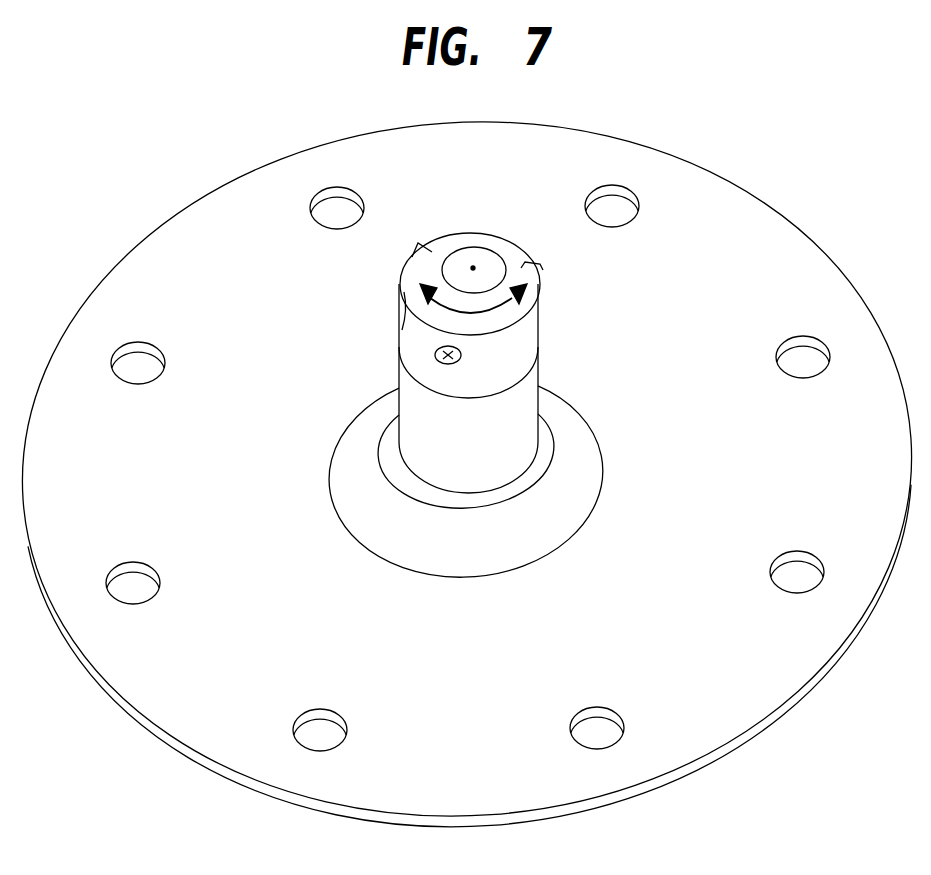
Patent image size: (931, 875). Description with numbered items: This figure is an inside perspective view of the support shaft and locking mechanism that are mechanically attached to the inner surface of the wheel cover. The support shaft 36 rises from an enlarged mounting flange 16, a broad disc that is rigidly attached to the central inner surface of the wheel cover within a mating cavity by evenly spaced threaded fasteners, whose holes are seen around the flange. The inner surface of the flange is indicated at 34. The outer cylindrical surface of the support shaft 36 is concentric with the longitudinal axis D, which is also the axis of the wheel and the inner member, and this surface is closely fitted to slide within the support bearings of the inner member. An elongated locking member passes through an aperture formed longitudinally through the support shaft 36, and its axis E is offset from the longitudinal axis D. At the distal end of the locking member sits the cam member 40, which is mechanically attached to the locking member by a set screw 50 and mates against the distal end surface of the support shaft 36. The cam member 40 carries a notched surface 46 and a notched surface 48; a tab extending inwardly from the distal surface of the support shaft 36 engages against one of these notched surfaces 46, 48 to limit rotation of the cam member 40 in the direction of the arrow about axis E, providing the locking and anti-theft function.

The enlarged mounting flange 16 is at (743, 188).
The plate surface 34 is at (742, 252).
The support shaft 36 is at (538, 370).
The cam member 40 is at (402, 295).
The notched surface 46 is at (430, 248).
The notched surface 48 is at (522, 262).
The set screw 50 is at (436, 357).
The longitudinal axis D is at (470, 290).
The axis of the locking member E is at (473, 268).